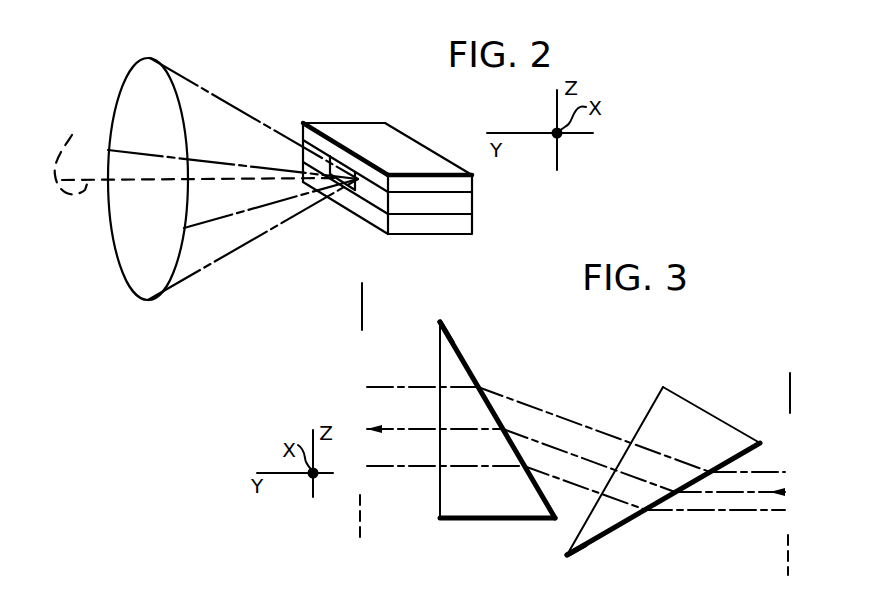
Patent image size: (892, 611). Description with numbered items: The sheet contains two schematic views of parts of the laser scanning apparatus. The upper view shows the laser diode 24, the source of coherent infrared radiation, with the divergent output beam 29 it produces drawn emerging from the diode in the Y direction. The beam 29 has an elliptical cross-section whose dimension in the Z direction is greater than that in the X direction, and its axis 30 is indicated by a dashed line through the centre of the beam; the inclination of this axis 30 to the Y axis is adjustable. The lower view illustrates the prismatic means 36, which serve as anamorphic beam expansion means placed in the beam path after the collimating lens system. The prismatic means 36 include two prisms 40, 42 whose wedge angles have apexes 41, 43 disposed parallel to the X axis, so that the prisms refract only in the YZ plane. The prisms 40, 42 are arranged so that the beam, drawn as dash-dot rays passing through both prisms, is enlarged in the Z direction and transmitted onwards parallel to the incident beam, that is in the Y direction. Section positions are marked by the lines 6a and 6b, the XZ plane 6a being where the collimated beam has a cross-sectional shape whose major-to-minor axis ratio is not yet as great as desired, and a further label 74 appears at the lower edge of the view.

In FIG. 2, the laser diode 24 is at (364, 112).
In FIG. 2, the output beam 29 is at (148, 57).
In FIG. 2, the axis 30 is at (197, 153).
In FIG. 3, the prismatic means 36 is at (533, 370).
In FIG. 3, the prism 40 is at (683, 410).
In FIG. 3, the apex 41 is at (567, 556).
In FIG. 3, the prism 42 is at (478, 500).
In FIG. 3, the apex 43 is at (440, 322).
In FIG. 3, the XZ plane 6a is at (780, 392).
In FIG. 3, the section line 6b is at (367, 315).
In FIG. 3, the substrate 74 is at (360, 606).